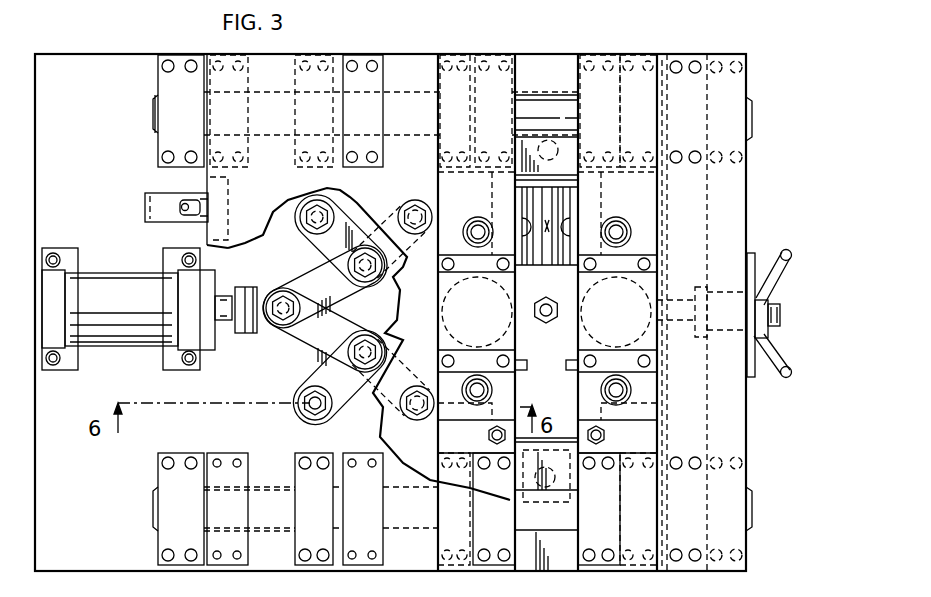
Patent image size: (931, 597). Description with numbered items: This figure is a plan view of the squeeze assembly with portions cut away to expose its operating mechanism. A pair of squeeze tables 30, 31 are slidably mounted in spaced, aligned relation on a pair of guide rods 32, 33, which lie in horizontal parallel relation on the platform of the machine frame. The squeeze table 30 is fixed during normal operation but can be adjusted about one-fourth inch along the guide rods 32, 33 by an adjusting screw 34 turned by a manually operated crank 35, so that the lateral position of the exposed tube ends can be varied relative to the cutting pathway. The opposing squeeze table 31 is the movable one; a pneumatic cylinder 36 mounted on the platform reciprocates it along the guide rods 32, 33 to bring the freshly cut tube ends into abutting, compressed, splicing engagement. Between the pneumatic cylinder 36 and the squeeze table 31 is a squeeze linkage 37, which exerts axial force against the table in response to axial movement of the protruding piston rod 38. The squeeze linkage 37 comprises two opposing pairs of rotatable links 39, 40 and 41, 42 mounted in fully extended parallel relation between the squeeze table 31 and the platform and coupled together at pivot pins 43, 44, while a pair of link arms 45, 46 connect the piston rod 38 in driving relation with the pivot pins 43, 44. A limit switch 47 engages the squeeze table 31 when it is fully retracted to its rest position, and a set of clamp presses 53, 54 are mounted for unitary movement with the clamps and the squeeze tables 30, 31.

The squeeze table 30 is at (740, 99).
The squeeze table 31 is at (405, 55).
The guide rod 32 is at (540, 96).
The guide rod 33 is at (560, 535).
The adjusting screw 34 is at (781, 314).
The crank 35 is at (780, 276).
The pneumatic cylinder 36 is at (131, 349).
The squeeze linkage 37 is at (280, 281).
The piston rod 38 is at (258, 335).
The rotatable link 39 is at (401, 270).
The rotatable link 40 is at (345, 232).
The rotatable link 41 is at (362, 410).
The rotatable link 42 is at (311, 383).
The pivot pin 43 is at (362, 340).
The pivot pin 44 is at (369, 344).
The link arm 45 is at (302, 266).
The link arm 46 is at (347, 304).
The limit switch 47 is at (183, 193).
The clamp press 53 is at (650, 215).
The clamp press 54 is at (437, 183).